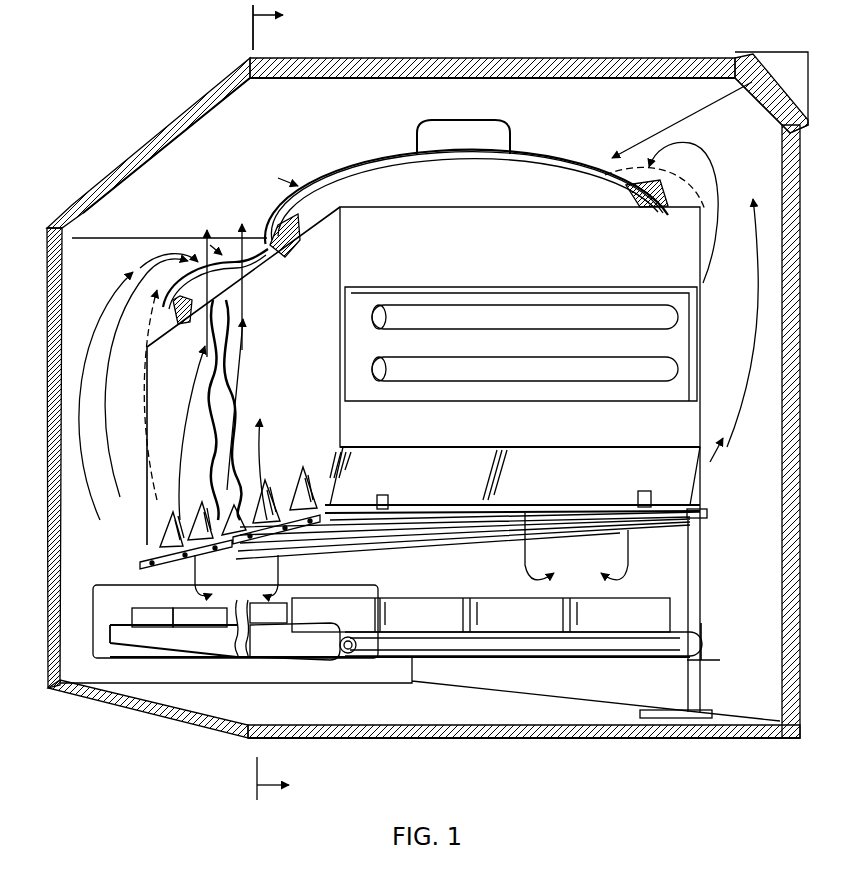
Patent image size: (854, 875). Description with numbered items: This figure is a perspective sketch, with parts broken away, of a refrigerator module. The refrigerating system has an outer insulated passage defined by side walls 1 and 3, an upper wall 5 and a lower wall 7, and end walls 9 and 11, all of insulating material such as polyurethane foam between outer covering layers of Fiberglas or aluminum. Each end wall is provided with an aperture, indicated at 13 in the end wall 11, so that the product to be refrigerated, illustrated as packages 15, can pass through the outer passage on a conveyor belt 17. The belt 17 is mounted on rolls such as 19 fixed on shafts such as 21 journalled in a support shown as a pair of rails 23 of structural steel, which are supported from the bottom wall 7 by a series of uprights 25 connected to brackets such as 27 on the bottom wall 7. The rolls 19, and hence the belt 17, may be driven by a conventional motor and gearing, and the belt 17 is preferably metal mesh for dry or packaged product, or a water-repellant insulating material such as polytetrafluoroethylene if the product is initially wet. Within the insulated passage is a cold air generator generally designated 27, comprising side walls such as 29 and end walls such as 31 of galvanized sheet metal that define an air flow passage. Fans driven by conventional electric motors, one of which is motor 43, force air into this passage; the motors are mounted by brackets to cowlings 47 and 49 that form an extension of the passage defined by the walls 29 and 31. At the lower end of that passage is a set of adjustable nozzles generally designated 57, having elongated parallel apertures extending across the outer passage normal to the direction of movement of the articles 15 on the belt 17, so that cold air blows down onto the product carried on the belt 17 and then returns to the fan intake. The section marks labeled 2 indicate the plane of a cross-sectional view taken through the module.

The side wall 1 is at (46, 245).
The section line 2 is at (281, 403).
The side wall 3 is at (770, 487).
The upper wall 5 is at (507, 60).
The lower wall 7 is at (546, 718).
The end wall 9 is at (789, 87).
The end wall 11 is at (70, 489).
The aperture 13 is at (107, 598).
The packages 15 is at (428, 604).
The conveyor belt 17 is at (560, 650).
The roll 19 is at (350, 655).
The shaft 21 is at (332, 650).
The rails 23 is at (702, 638).
The uprights 25 is at (704, 578).
The cold air generator 27 is at (360, 154).
The side wall 29 is at (310, 317).
The end wall 31 is at (531, 264).
The electric motor 43 is at (476, 145).
The cowling 47 is at (178, 315).
The cowling 49 is at (487, 197).
The adjustable nozzles 57 is at (345, 476).